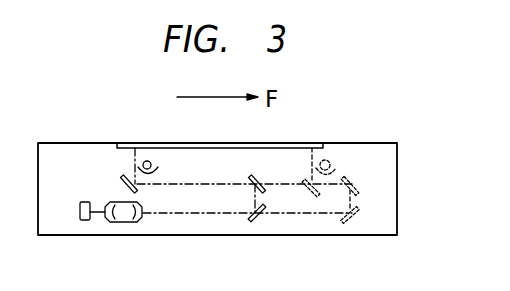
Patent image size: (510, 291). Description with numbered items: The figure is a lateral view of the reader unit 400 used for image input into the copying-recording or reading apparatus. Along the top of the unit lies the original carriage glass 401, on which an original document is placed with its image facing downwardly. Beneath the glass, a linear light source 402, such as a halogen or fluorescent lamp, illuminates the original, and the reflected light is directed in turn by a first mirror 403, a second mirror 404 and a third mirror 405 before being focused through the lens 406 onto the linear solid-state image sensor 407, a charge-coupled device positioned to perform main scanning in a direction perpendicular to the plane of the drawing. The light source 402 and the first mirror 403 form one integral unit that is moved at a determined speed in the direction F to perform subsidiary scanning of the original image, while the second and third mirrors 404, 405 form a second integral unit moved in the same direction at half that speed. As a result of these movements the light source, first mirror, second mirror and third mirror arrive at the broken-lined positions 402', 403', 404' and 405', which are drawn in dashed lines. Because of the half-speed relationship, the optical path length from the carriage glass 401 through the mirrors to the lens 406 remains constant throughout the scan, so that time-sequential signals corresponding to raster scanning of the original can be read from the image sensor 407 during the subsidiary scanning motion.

The reader unit 400 is at (399, 153).
The original carriage glass 401 is at (207, 143).
The linear light source 402 is at (170, 167).
The broken-lined position of light source 402' is at (348, 139).
The first mirror 403 is at (103, 170).
The broken-lined position of first mirror 403' is at (293, 196).
The second mirror 404 is at (274, 172).
The broken-lined position of second mirror 404' is at (367, 176).
The third mirror 405 is at (269, 240).
The broken-lined position of third mirror 405' is at (367, 222).
The lens 406 is at (128, 222).
The linear solid-state image sensor 407 is at (85, 221).